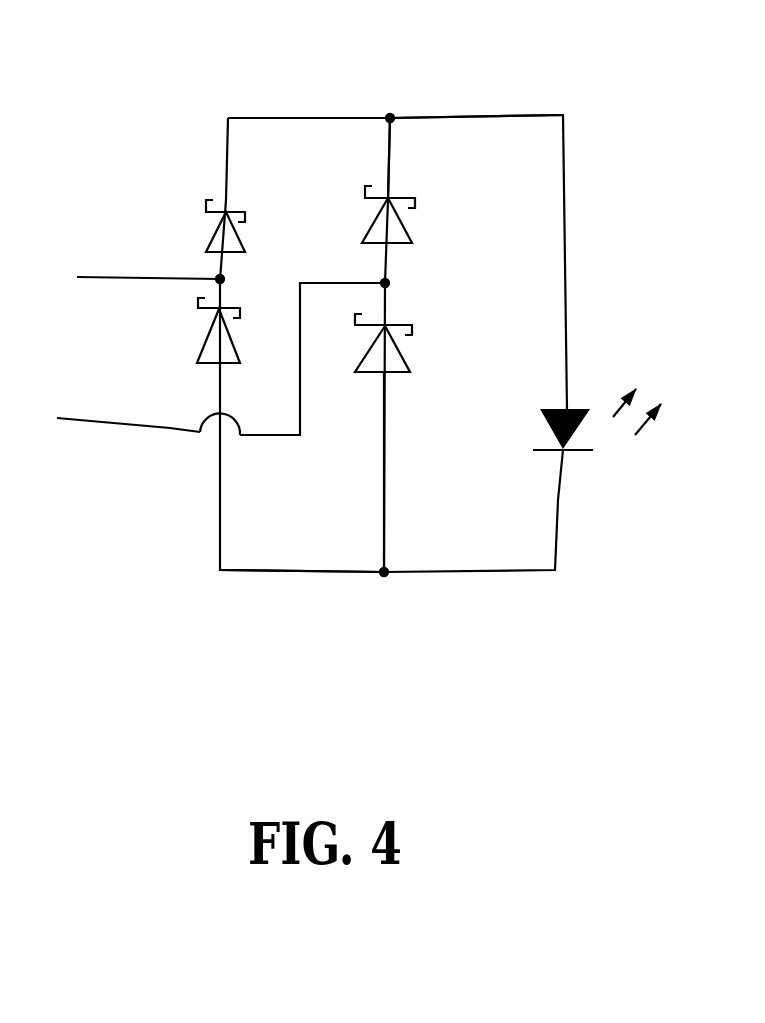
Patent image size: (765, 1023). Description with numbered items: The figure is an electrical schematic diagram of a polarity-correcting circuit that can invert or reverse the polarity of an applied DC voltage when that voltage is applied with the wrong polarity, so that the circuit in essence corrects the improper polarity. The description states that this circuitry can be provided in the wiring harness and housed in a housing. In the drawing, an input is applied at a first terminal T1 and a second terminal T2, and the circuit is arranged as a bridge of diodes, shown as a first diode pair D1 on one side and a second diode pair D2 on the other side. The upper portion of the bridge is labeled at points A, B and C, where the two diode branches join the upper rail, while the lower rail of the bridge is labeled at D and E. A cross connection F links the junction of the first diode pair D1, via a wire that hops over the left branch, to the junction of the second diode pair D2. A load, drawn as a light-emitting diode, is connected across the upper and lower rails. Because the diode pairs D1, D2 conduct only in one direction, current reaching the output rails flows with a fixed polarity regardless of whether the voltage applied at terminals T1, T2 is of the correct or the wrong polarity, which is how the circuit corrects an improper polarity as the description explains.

The first branch node A is at (268, 112).
The second branch node B is at (477, 111).
The center branch node C is at (380, 160).
The bottom node D is at (262, 580).
The center bottom branch E is at (380, 505).
The cross-connection wire F is at (263, 447).
The first terminal T1 is at (129, 245).
The second terminal T2 is at (125, 452).
The first diode pair D1 is at (236, 281).
The second diode pair D2 is at (406, 279).